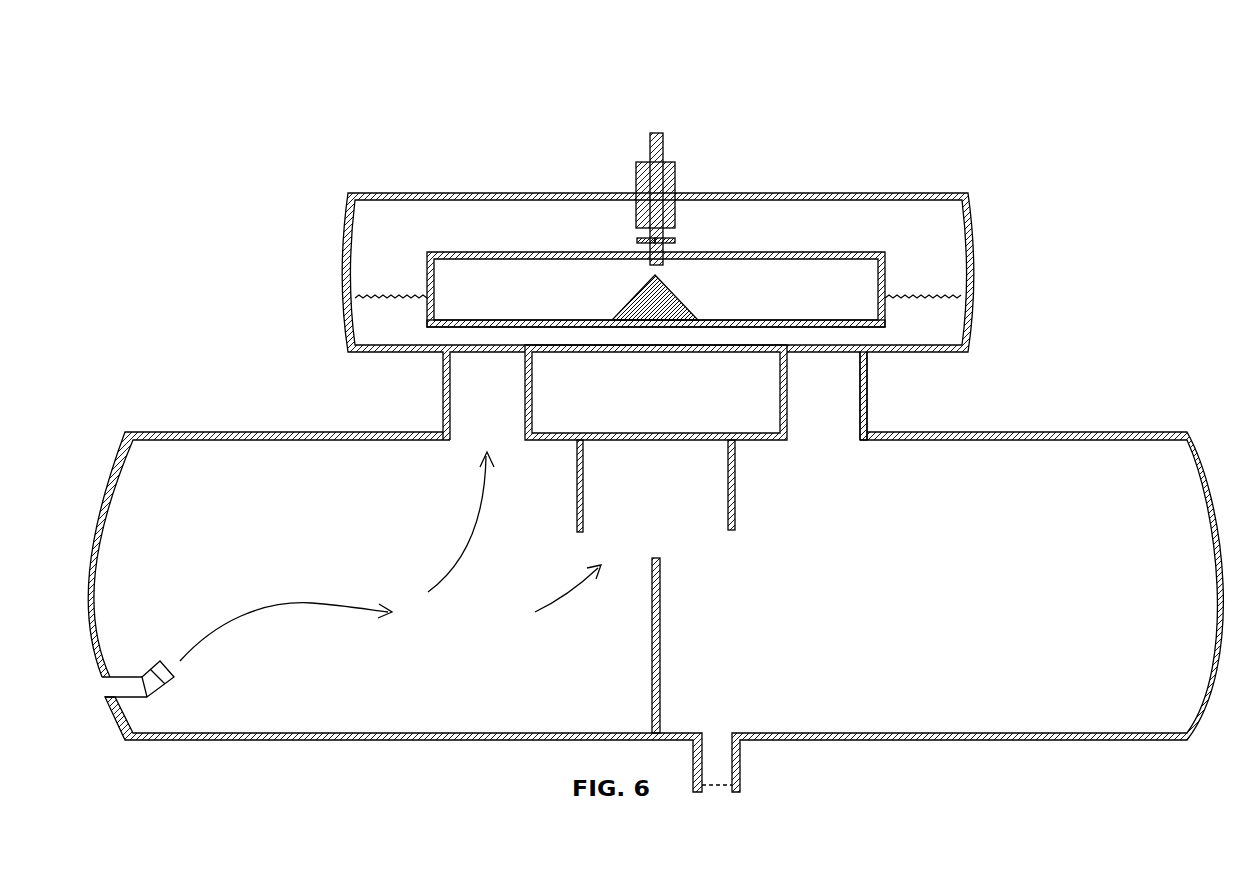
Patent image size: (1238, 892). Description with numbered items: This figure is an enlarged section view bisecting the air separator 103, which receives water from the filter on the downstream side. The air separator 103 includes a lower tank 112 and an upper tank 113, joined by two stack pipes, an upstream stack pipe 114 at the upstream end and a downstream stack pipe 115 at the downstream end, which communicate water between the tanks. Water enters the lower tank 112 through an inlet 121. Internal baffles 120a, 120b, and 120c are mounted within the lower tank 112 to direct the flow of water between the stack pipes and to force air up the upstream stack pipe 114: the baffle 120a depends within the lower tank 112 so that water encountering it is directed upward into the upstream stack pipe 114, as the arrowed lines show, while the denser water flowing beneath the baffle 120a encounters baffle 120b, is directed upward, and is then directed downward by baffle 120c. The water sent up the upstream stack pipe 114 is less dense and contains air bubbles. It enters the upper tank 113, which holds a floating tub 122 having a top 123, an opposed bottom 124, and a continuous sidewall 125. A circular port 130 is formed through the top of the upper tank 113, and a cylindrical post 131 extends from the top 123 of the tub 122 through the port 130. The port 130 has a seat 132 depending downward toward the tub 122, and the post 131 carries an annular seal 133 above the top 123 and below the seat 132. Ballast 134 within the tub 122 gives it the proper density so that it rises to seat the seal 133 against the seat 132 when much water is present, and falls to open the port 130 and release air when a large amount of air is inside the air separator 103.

The air separator 103 is at (1126, 143).
The lower tank 112 is at (97, 501).
The upper tank 113 is at (343, 272).
The upstream stack pipe 114 is at (533, 398).
The downstream stack pipe 115 is at (868, 398).
The baffle 120a is at (577, 508).
The baffle 120b is at (652, 625).
The baffle 120c is at (735, 515).
The inlet 121 is at (125, 676).
The floating tub 122 is at (886, 291).
The top 123 is at (835, 252).
The bottom 124 is at (836, 328).
The sidewall 125 is at (427, 280).
The port 130 is at (677, 189).
The post 131 is at (665, 141).
The seat 132 is at (637, 232).
The seal 133 is at (676, 241).
The ballast 134 is at (686, 303).